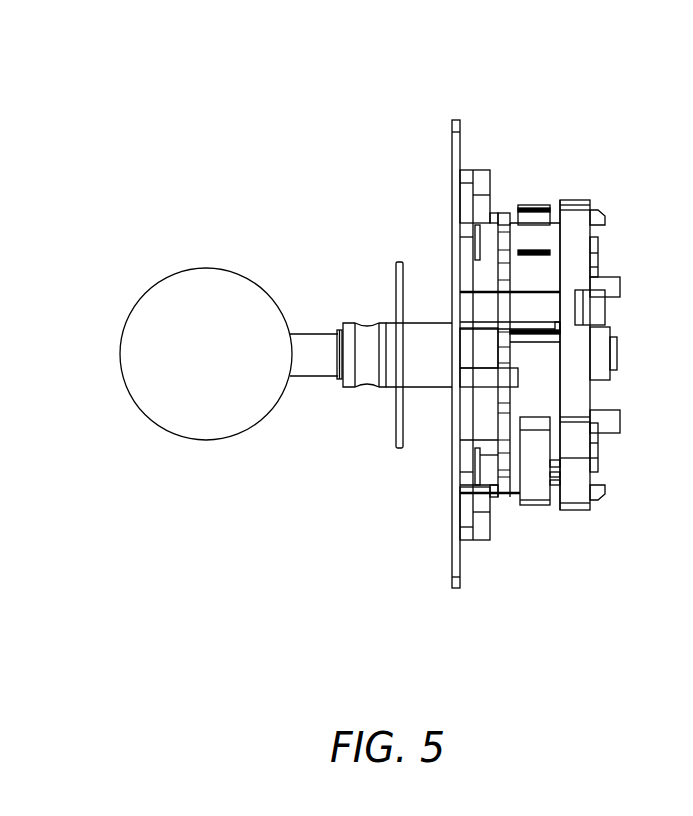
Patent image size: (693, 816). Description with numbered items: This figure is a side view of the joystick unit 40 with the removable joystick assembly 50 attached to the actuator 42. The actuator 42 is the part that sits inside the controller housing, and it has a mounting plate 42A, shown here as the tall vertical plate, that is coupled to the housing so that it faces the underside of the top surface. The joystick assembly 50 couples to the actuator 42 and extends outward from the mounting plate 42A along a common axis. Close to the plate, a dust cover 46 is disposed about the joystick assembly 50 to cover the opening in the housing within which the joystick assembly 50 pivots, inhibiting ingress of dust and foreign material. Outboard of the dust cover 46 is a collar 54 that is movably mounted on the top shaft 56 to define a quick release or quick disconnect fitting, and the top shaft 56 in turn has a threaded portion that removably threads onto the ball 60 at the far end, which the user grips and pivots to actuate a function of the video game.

The joystick unit 40 is at (90, 82).
The actuator 42 is at (626, 143).
The mounting plate 42A is at (450, 147).
The dust cover 46 is at (395, 275).
The joystick assembly 50 is at (371, 545).
The collar 54 is at (367, 390).
The top shaft 56 is at (318, 332).
The ball 60 is at (218, 366).